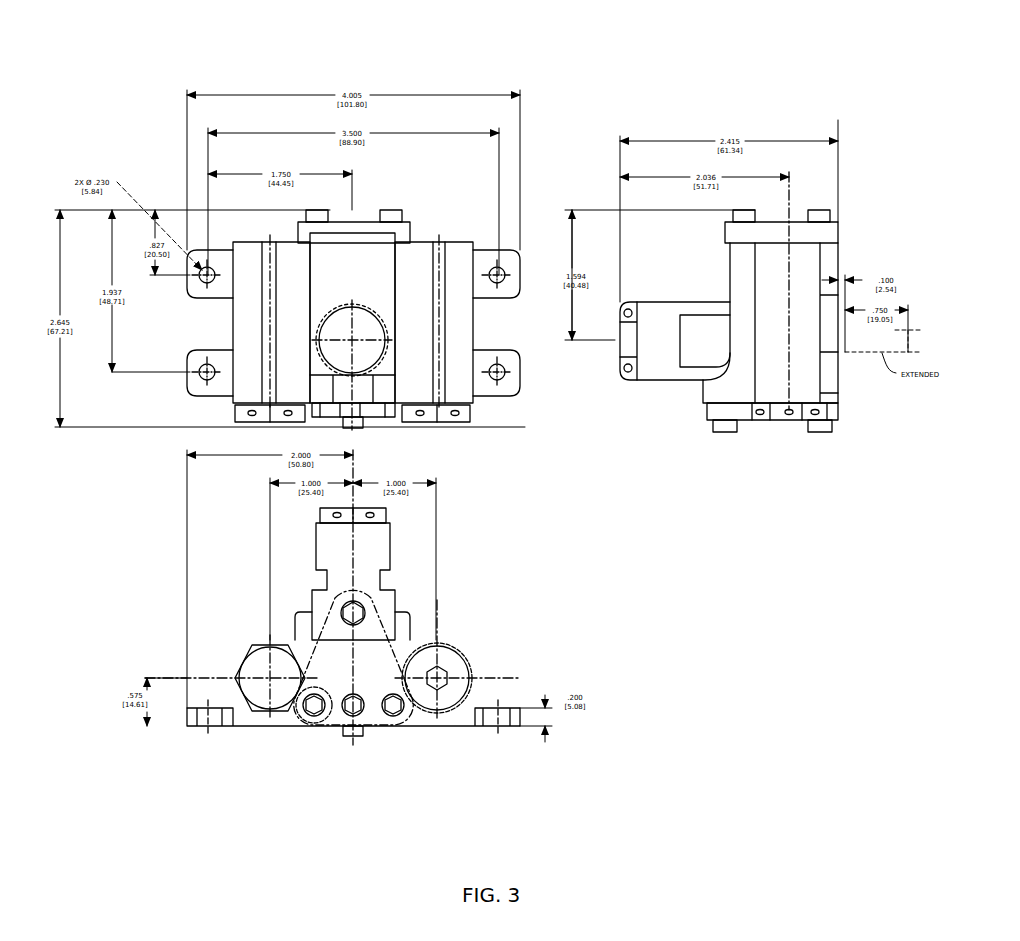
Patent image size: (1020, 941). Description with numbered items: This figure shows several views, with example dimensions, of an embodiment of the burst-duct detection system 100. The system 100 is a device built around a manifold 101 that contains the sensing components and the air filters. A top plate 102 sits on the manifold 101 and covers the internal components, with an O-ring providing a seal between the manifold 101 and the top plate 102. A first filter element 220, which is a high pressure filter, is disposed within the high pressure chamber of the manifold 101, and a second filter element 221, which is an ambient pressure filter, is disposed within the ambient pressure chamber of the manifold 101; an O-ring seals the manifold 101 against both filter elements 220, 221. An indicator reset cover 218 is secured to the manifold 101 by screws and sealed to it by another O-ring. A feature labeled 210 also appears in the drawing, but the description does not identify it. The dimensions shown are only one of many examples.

The burst-duct detection system 100 is at (492, 80).
The manifold 101 is at (253, 250).
The top plate 102 is at (365, 232).
The connector port 210 is at (306, 210).
The indicator reset cover 218 is at (340, 658).
The first filter element 220 is at (260, 668).
The second filter element 221 is at (238, 412).